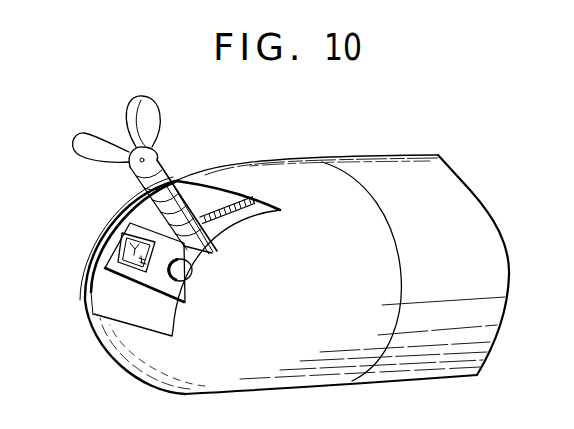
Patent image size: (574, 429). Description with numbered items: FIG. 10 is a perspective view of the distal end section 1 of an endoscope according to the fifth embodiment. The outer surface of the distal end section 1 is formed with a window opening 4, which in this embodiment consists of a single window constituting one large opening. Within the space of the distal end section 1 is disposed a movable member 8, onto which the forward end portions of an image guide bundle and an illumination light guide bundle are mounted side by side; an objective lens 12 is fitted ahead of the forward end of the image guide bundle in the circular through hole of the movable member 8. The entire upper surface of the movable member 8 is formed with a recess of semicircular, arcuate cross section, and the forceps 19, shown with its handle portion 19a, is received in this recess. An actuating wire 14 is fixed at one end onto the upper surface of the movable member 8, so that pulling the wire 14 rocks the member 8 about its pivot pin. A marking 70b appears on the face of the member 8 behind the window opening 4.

The distal end section 1 is at (263, 164).
The window opening 4 is at (152, 329).
The movable member 8 is at (153, 275).
The objective lens 12 is at (192, 270).
The actuating wire 14 is at (243, 204).
The forceps 19 is at (175, 176).
The key bow 19a is at (86, 141).
The window 70b is at (130, 257).